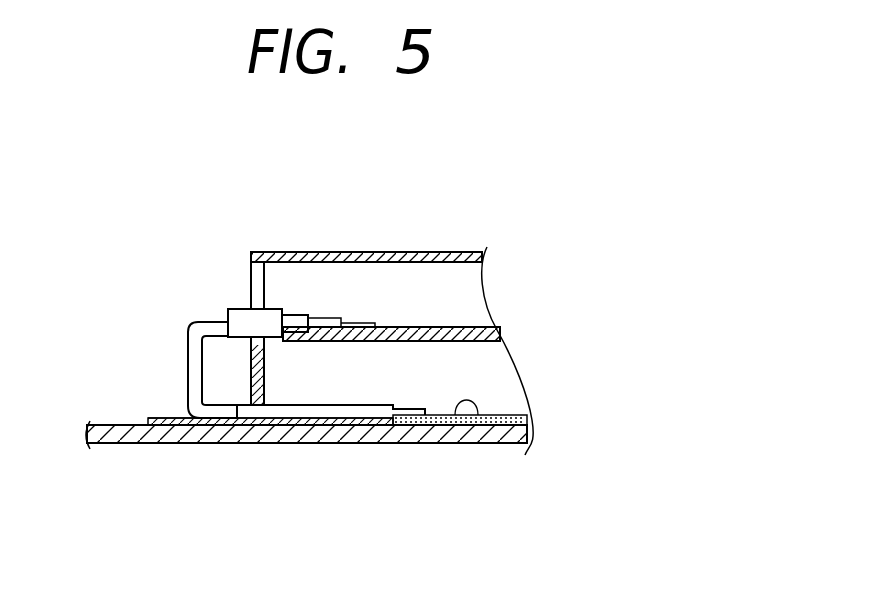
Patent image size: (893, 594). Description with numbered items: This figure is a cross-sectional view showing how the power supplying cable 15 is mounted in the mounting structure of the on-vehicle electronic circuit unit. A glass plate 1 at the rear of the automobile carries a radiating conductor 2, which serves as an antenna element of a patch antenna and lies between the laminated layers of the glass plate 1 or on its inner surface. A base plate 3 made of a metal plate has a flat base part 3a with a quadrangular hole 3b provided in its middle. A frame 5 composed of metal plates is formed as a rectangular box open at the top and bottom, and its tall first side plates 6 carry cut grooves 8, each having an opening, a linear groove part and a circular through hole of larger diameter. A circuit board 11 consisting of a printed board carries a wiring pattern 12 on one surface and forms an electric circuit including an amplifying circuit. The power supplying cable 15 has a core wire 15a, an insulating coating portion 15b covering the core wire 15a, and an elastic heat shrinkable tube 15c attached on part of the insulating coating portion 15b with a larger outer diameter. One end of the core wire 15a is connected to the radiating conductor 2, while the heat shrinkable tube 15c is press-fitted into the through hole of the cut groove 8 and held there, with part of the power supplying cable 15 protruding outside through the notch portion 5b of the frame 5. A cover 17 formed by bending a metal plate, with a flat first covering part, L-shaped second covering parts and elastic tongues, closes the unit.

The glass plate 1 is at (148, 443).
The radiating conductor 2 is at (473, 443).
The base plate 3 is at (160, 417).
The base part 3a is at (153, 418).
The quadrangular hole 3b is at (292, 424).
The frame 5 is at (291, 394).
The notch portion 5b is at (237, 407).
The first side plates 6 is at (266, 360).
The cut grooves 8 is at (285, 252).
The circuit board 11 is at (448, 327).
The wiring pattern 12 is at (375, 327).
The power supplying cable 15 is at (263, 342).
The core wire 15a is at (335, 322).
The insulating coating portion 15b is at (380, 409).
The heat shrinkable tube 15c is at (281, 309).
The cover 17 is at (393, 204).